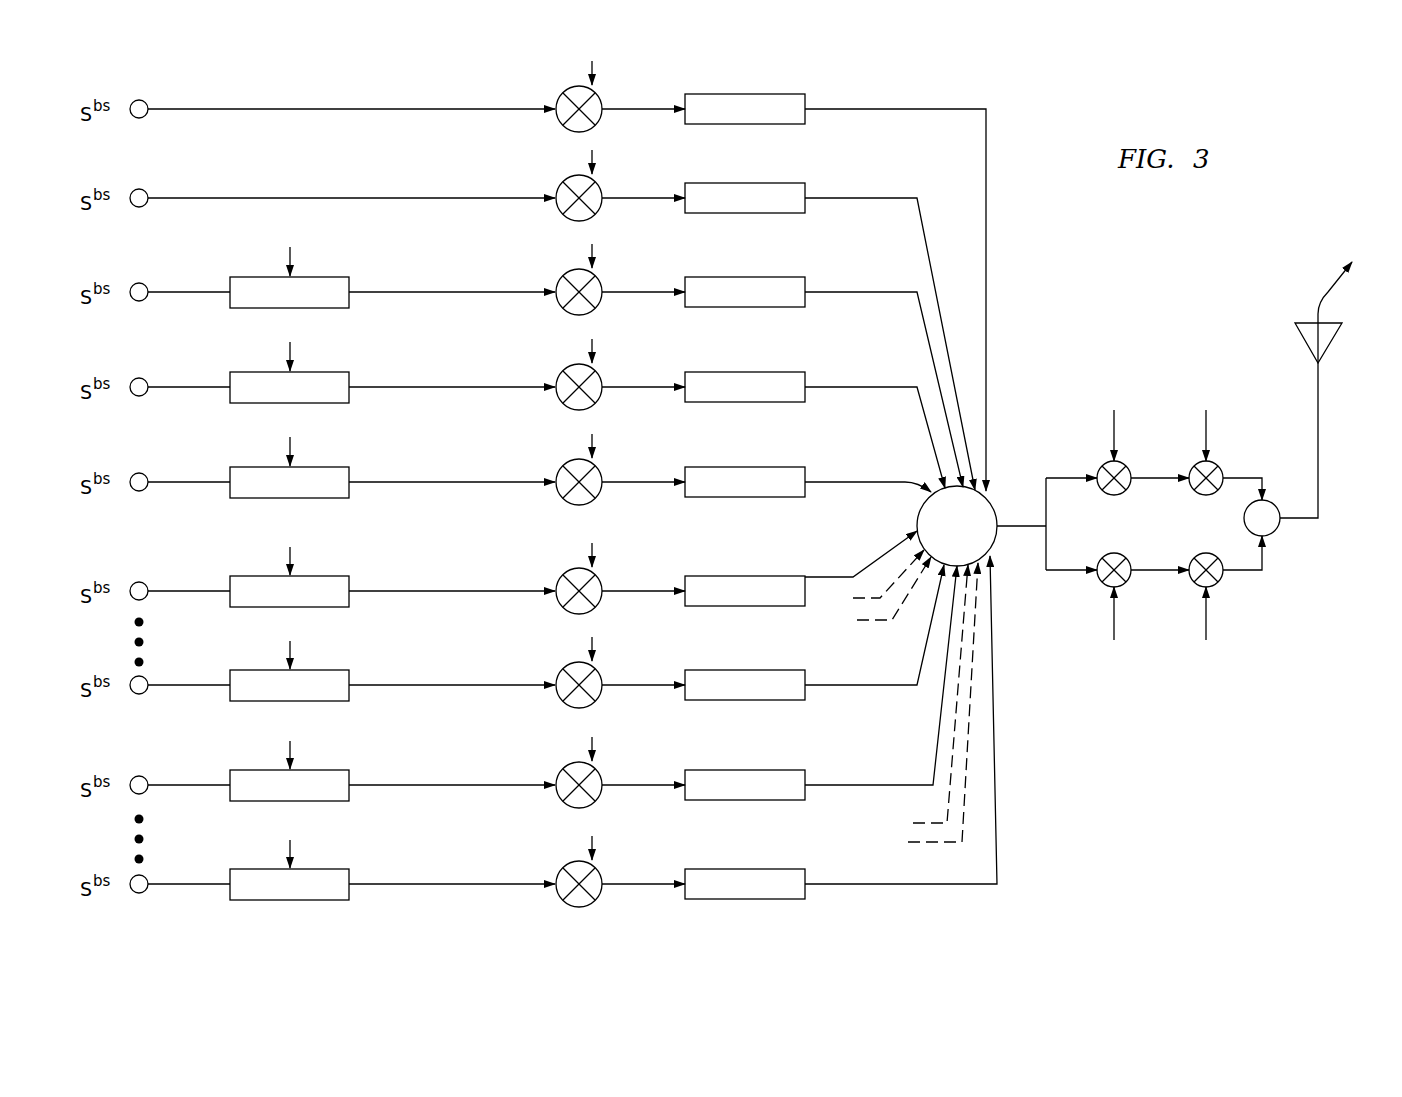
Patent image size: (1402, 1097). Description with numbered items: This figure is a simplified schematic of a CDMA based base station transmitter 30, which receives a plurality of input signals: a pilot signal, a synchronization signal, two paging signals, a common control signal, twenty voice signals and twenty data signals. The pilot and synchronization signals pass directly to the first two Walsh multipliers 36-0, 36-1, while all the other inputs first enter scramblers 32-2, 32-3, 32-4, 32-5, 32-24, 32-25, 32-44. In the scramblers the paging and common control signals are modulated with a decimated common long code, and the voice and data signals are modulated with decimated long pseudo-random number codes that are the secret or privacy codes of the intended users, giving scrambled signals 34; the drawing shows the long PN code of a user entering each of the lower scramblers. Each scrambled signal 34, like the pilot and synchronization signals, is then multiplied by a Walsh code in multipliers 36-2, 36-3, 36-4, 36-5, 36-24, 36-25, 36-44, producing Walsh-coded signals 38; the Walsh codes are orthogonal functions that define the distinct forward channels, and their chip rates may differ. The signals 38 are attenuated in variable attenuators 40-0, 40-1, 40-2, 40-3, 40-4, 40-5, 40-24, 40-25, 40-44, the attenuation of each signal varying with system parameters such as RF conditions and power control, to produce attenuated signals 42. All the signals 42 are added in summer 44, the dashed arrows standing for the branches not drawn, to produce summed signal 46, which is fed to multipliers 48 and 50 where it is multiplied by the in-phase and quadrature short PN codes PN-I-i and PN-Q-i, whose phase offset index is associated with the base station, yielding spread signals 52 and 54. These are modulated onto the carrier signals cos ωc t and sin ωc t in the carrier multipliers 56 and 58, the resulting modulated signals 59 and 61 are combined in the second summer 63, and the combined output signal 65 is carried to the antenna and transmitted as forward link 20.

The forward link 20 is at (1326, 300).
The BS transmitter 30 is at (1195, 238).
The scrambler 32-2 is at (232, 280).
The scrambler 32-3 is at (232, 377).
The scrambler 32-4 is at (232, 472).
The scrambler 32-5 is at (232, 579).
The scrambler 32-24 is at (232, 674).
The scrambler 32-25 is at (232, 775).
The scrambler 32-44 is at (232, 873).
The scrambled output signal 34 is at (467, 267).
The multiplier 36-0 is at (570, 89).
The multiplier 36-1 is at (570, 180).
The multiplier 36-2 is at (570, 272).
The multiplier 36-3 is at (570, 369).
The multiplier 36-4 is at (570, 464).
The multiplier 36-5 is at (570, 571).
The multiplier 36-24 is at (570, 666).
The multiplier 36-25 is at (570, 767).
The multiplier 36-44 is at (570, 865).
The Walsh-coded output signal 38 is at (625, 83).
The variable attenuator 40-0 is at (744, 94).
The variable attenuator 40-1 is at (744, 185).
The variable attenuator 40-2 is at (744, 277).
The variable attenuator 40-3 is at (744, 374).
The variable attenuator 40-4 is at (744, 469).
The variable attenuator 40-5 is at (744, 576).
The variable attenuator 40-24 is at (744, 671).
The variable attenuator 40-25 is at (744, 772).
The variable attenuator 40-44 is at (744, 870).
The attenuated output signal 42 is at (846, 83).
The summer 44 is at (991, 499).
The summed output signal 46 is at (1018, 527).
The multiplier 48 is at (1102, 466).
The multiplier 50 is at (1101, 585).
The in-phase spread signal 52 is at (1145, 474).
The quadrature spread signal 54 is at (1130, 545).
The in-phase carrier modulator 56 is at (1218, 463).
The quadrature carrier modulator 58 is at (1222, 582).
The in-phase modulated signal 59 is at (1259, 476).
The quadrature modulated signal 61 is at (1247, 572).
The summer 63 is at (1278, 532).
The output signal 65 is at (1322, 511).